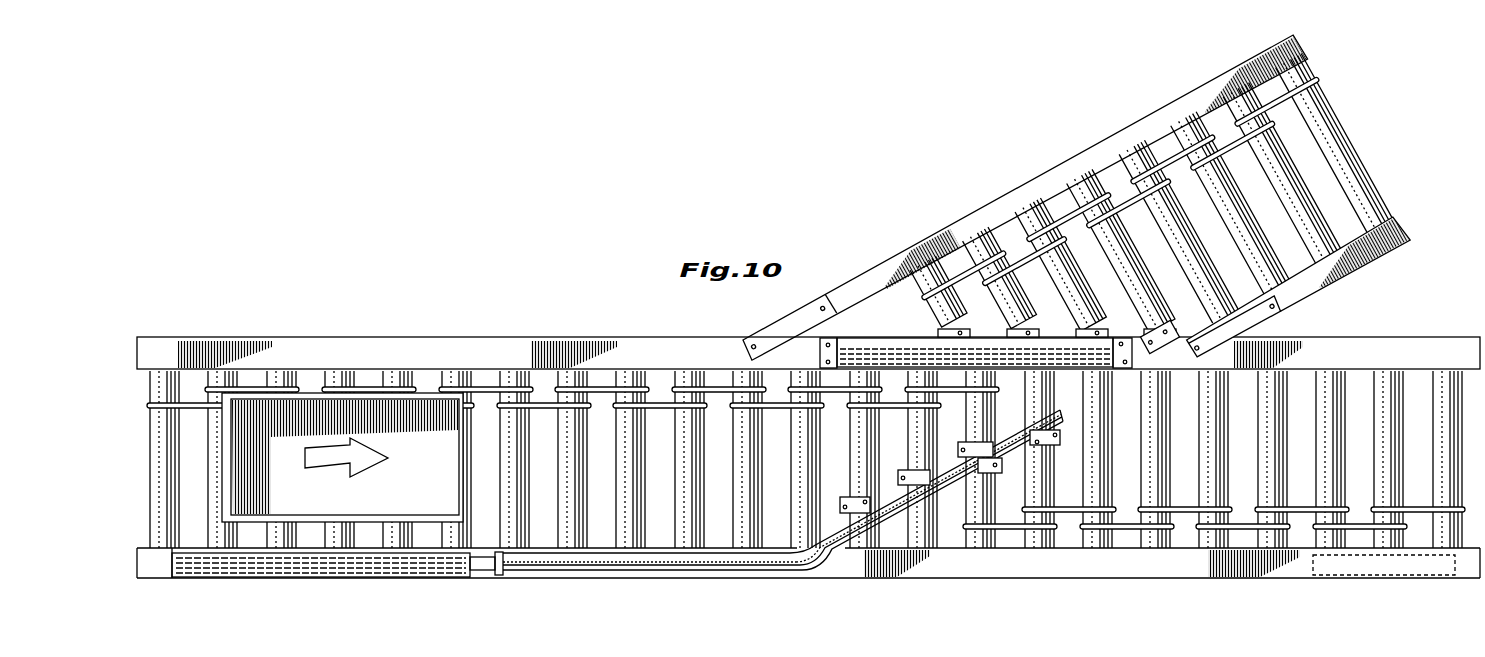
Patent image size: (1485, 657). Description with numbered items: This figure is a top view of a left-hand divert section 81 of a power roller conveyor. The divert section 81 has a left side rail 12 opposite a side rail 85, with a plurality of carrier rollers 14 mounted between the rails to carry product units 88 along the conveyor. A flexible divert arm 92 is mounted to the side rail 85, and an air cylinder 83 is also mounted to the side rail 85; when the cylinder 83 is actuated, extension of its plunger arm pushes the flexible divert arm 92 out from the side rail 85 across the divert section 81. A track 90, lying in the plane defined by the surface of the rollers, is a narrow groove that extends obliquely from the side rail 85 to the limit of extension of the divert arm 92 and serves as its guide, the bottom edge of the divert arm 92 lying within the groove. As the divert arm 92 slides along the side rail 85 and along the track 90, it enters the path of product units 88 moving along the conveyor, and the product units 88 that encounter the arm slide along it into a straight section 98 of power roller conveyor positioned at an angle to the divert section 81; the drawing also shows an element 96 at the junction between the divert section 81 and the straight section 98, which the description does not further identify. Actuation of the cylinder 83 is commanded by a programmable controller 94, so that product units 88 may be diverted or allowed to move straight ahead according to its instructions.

The left side rail 12 is at (457, 336).
The carrier rollers 14 is at (643, 518).
The left-hand divert section 81 is at (572, 270).
The air cylinder 83 is at (290, 580).
The side rail 85 is at (1143, 579).
The product units 88 is at (218, 473).
The track 90 is at (946, 497).
The flexible divert arm 92 is at (770, 571).
The programmable controller 94 is at (1341, 566).
The hinge bar 96 is at (876, 338).
The straight section 98 is at (1375, 142).